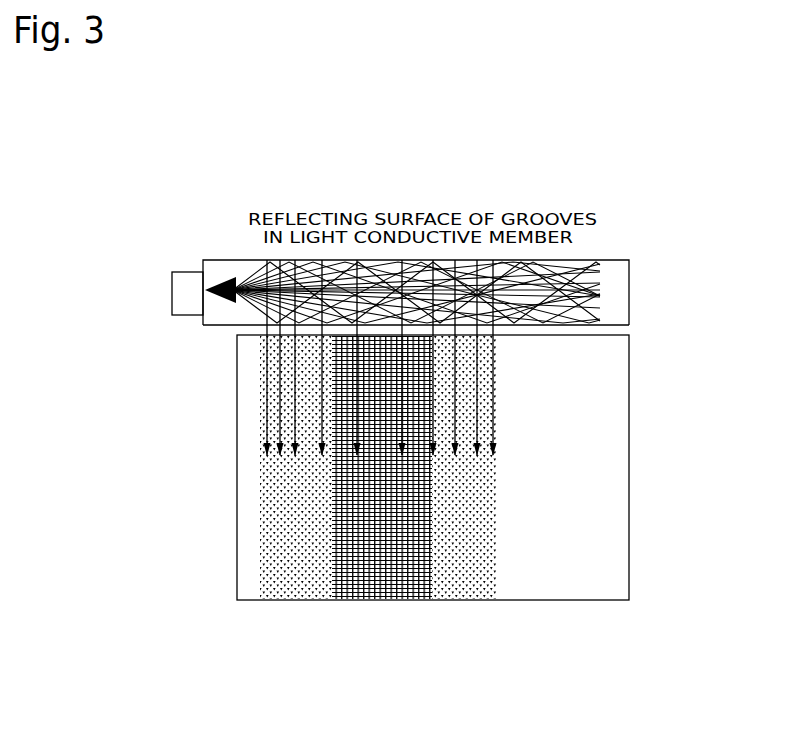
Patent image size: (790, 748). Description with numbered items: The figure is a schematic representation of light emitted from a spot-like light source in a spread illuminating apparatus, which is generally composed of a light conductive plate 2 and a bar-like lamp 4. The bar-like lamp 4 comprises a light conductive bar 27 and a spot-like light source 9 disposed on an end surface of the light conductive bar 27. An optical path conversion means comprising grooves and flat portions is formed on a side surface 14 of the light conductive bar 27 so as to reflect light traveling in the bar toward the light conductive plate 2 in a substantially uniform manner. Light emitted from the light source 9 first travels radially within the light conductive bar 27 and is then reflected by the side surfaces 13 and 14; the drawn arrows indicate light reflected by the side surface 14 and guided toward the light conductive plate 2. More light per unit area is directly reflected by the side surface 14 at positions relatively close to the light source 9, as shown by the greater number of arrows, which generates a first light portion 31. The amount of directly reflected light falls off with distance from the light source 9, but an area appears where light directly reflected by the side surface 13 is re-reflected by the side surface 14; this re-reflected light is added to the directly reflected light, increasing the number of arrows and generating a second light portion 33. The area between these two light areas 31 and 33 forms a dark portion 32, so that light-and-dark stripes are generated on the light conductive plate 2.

The light conductive plate 2 is at (603, 527).
The light source unit 4 is at (113, 172).
The spot-like light source 9 is at (187, 285).
The side surface 13 is at (580, 325).
The side surface 14 is at (605, 258).
The light conductive bar 27 is at (217, 273).
The first light portion 31 is at (290, 645).
The dark portion 32 is at (387, 643).
The second light portion 33 is at (478, 645).